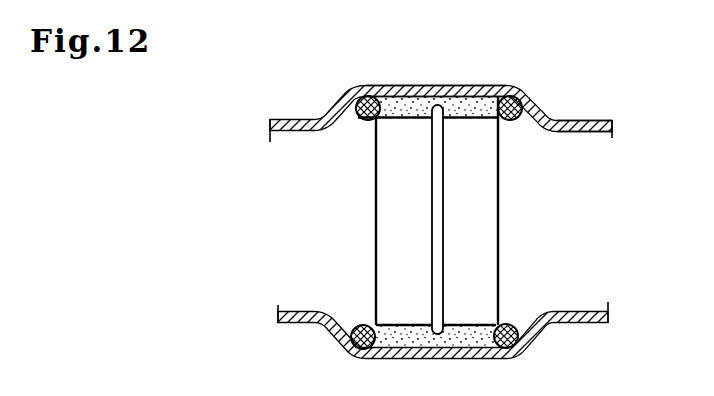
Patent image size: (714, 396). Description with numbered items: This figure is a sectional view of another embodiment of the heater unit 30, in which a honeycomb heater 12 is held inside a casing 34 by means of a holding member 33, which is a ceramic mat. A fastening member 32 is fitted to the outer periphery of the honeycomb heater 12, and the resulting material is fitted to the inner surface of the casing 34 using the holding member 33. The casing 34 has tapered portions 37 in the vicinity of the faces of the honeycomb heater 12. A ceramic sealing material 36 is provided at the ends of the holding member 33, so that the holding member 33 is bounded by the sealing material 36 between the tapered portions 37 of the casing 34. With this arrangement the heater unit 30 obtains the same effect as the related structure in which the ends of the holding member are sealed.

The honeycomb heater 12 is at (477, 243).
The heater unit 30 is at (489, 75).
The fastening member 32 is at (440, 188).
The holding member 33 is at (460, 112).
The casing 34 is at (580, 121).
The ceramic sealing material 36 is at (517, 323).
The tapered portions 37 is at (518, 86).